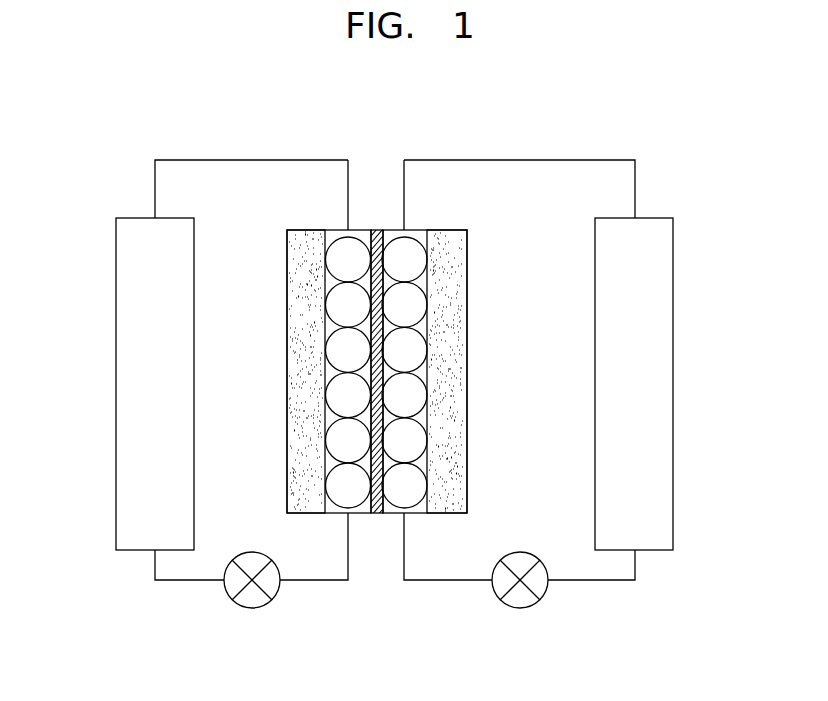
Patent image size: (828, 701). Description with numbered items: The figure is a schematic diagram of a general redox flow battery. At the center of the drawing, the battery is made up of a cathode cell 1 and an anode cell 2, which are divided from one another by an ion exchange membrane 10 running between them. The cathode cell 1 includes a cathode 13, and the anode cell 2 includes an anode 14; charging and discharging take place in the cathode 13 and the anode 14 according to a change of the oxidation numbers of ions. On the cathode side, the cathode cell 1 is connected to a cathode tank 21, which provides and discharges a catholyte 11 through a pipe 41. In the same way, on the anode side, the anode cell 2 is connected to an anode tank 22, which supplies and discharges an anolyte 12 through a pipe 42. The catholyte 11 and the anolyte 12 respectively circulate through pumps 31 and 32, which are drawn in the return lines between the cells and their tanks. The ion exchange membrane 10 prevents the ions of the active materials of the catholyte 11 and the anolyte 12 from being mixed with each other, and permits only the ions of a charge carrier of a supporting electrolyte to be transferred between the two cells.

The cathode cell 1 is at (292, 396).
The anode cell 2 is at (460, 396).
The ion exchange membrane 10 is at (378, 222).
The catholyte 11 is at (338, 514).
The anolyte 12 is at (412, 514).
The cathode 13 is at (303, 462).
The anode 14 is at (450, 462).
The cathode tank 21 is at (120, 284).
The anode tank 22 is at (668, 284).
The pump 31 is at (252, 608).
The pump 32 is at (520, 608).
The pipe 41 is at (257, 160).
The pipe 42 is at (521, 160).